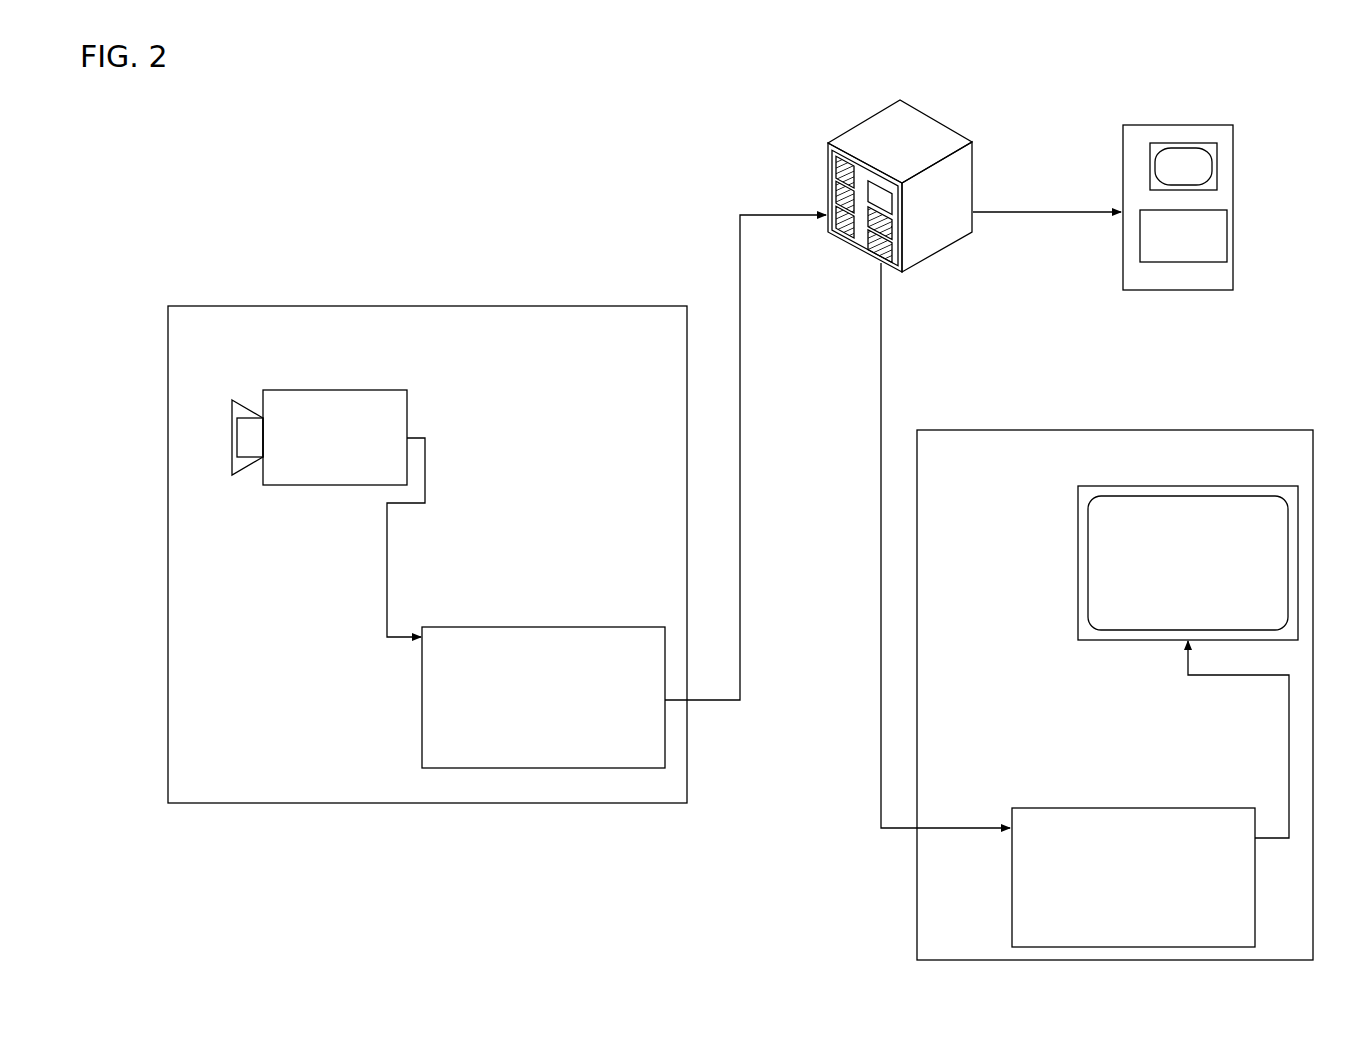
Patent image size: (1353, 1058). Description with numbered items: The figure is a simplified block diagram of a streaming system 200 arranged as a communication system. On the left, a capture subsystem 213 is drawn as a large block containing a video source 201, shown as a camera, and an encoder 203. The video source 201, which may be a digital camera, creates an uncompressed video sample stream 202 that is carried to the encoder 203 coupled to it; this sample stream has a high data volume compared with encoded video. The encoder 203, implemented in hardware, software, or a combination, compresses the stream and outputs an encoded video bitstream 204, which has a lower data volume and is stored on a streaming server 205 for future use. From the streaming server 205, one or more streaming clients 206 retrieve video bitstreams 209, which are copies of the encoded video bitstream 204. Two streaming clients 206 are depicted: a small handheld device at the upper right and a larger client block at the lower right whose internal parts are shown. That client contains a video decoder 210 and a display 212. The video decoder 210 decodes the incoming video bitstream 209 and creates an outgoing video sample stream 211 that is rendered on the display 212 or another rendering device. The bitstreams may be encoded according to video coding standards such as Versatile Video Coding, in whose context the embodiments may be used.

The streaming system 200 is at (379, 160).
The video source 201 is at (337, 390).
The uncompressed video sample stream 202 is at (387, 572).
The encoder 203 is at (558, 627).
The encoded video bitstream 204 is at (740, 247).
The streaming server 205 is at (828, 150).
The streaming client 206 is at (1233, 167).
The video bitstream 209 is at (1045, 212).
The video decoder 210 is at (1012, 917).
The outgoing video sample stream 211 is at (1289, 733).
The display 212 is at (1078, 562).
The capture subsystem 213 is at (330, 803).